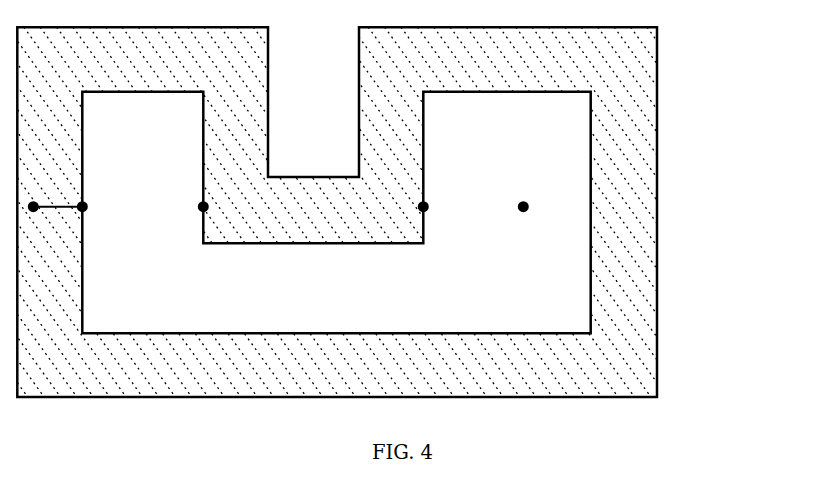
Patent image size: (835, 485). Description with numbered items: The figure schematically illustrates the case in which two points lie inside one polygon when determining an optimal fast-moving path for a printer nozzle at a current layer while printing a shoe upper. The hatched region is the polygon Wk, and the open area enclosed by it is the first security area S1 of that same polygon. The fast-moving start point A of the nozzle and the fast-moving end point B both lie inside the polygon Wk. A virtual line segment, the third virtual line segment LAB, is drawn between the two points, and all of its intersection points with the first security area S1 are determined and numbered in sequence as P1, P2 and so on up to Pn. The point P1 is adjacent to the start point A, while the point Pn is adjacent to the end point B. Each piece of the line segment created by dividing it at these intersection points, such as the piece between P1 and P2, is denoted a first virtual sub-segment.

The polygon Wk is at (657, 362).
The first security area S1 is at (638, 237).
The fast-moving start point A is at (55, 187).
The fast-moving end point B is at (523, 188).
The intersection point P1 is at (104, 211).
The intersection point P2 is at (225, 211).
The intersection point Pn is at (445, 211).